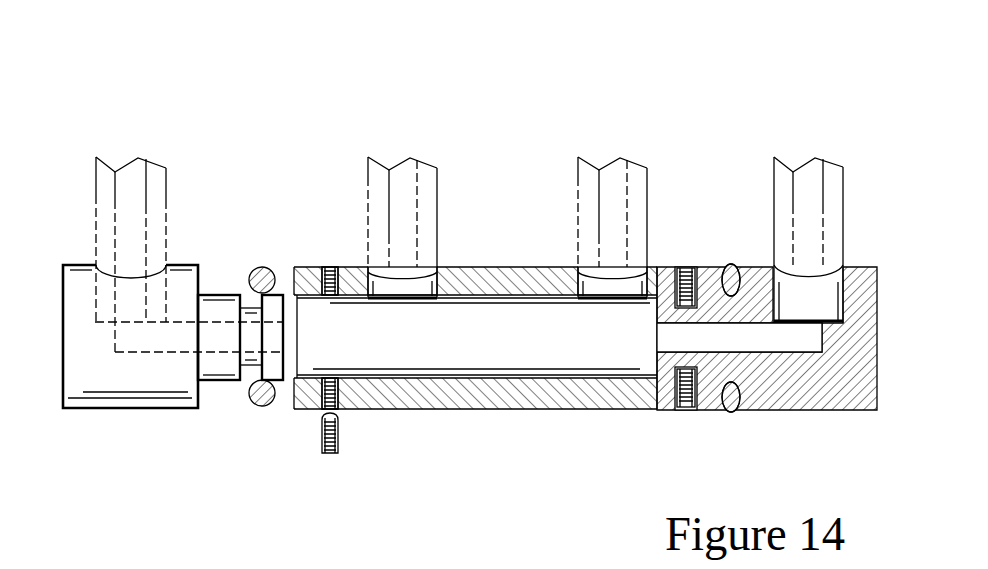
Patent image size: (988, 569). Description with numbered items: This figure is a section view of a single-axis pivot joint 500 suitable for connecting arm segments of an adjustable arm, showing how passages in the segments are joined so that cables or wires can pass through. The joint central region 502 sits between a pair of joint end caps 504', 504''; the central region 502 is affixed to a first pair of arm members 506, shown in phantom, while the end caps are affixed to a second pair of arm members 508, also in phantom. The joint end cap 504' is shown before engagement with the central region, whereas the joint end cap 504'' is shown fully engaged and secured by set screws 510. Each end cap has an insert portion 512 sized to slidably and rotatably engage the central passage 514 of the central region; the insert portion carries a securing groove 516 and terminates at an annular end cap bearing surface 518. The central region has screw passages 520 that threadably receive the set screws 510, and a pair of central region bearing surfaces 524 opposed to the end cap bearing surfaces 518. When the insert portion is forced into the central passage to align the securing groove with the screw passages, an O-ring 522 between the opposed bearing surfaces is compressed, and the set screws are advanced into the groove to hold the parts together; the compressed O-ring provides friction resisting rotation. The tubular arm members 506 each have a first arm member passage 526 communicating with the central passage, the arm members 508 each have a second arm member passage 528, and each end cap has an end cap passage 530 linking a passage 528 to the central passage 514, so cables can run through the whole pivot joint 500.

The pivot joint 500 is at (718, 85).
The joint central region 502 is at (491, 265).
The joint end cap 504' is at (157, 288).
The joint end cap 504'' is at (775, 382).
The first pair of arm members 506 is at (377, 163).
The second pair of arm members 508 is at (160, 167).
The set screws 510 is at (340, 452).
The insert portion 512 is at (228, 381).
The central passage 514 is at (493, 357).
The securing groove 516 is at (250, 313).
The end cap bearing surface 518 is at (200, 403).
The screw passages 520 is at (338, 272).
The O-ring 522 is at (268, 268).
The central region bearing surface 524 is at (292, 395).
The first arm member passage 526 is at (607, 198).
The second arm member passage 528 is at (133, 179).
The end cap passage 530 is at (153, 338).